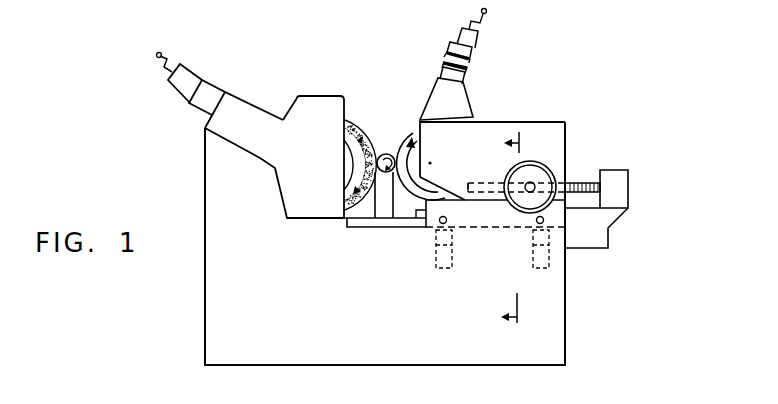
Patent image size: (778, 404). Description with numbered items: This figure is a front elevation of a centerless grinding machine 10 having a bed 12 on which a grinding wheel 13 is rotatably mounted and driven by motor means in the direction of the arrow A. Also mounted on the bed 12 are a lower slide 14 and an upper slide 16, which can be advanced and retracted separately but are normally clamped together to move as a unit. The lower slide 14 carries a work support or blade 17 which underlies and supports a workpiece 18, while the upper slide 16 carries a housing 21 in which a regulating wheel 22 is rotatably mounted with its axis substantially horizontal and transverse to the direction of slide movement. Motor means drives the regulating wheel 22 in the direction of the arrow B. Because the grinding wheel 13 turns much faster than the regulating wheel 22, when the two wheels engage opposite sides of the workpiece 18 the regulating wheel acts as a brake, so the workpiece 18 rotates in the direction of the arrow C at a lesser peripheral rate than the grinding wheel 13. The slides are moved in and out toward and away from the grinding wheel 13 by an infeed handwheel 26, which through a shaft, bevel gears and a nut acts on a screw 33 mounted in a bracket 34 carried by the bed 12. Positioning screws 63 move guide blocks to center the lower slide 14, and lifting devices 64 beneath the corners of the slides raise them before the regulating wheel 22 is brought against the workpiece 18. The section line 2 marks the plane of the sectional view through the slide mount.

The centerless grinding machine 10 is at (187, 301).
The bed 12 is at (562, 276).
The grinding wheel 13 is at (346, 118).
The lower slide 14 is at (383, 227).
The upper slide 16 is at (420, 228).
The work support or blade 17 is at (378, 200).
The workpiece 18 is at (377, 155).
The housing 21 is at (485, 128).
The regulating wheel 22 is at (409, 133).
The infeed handwheel 26 is at (541, 176).
The screw 33 is at (587, 183).
The bracket 34 is at (616, 190).
The positioning screws 63 is at (448, 219).
The lifting devices 64 is at (446, 269).
The section line 2 is at (519, 230).
The arrow A is at (367, 173).
The arrow B is at (400, 163).
The arrow C is at (388, 153).